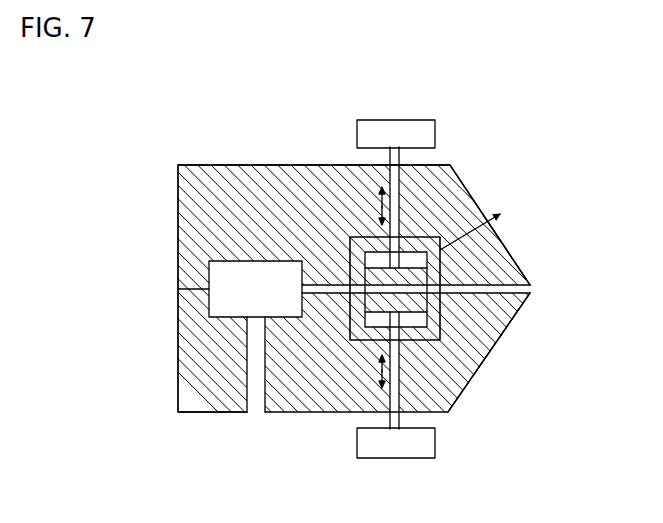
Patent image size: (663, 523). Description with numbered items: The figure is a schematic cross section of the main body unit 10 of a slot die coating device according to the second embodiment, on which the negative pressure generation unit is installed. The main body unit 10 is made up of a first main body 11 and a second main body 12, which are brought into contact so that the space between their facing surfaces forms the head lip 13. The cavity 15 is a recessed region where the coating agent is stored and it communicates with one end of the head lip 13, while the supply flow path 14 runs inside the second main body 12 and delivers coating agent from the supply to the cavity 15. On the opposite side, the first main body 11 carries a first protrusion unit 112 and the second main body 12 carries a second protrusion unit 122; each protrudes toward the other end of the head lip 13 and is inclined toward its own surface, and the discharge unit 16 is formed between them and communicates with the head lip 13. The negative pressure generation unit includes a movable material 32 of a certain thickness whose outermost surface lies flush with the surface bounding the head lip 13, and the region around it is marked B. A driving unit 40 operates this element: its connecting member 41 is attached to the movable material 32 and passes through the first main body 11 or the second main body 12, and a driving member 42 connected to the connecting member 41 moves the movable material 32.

The main body unit 10 is at (212, 160).
The first main body 11 is at (178, 218).
The second main body 12 is at (186, 357).
The head lip 13 is at (457, 289).
The supply flow path 14 is at (256, 413).
The cavity 15 is at (224, 306).
The discharge unit 16 is at (531, 289).
The movable material 32 is at (376, 252).
The driving unit 40 is at (426, 157).
The connecting member 41 is at (400, 188).
The driving member 42 is at (423, 128).
The first protrusion unit 112 is at (517, 257).
The second protrusion unit 122 is at (512, 318).
The region B is at (477, 225).